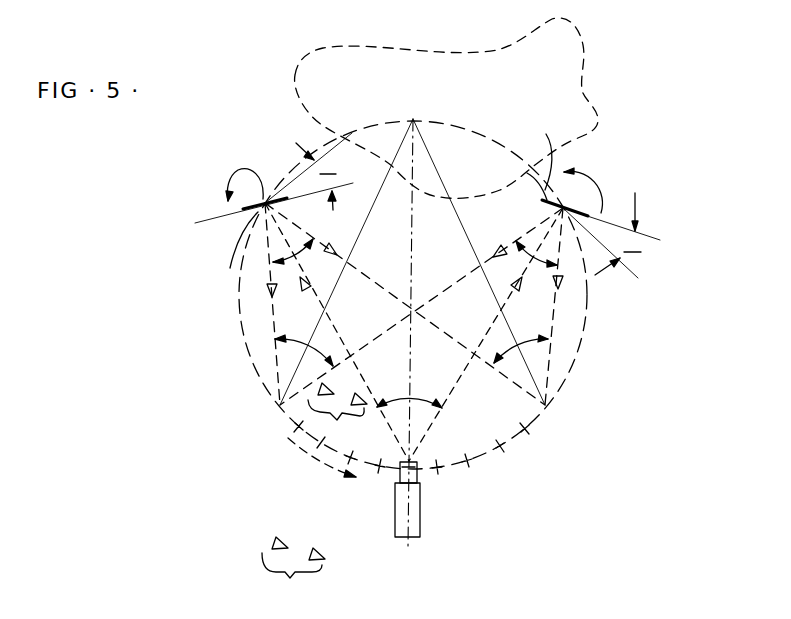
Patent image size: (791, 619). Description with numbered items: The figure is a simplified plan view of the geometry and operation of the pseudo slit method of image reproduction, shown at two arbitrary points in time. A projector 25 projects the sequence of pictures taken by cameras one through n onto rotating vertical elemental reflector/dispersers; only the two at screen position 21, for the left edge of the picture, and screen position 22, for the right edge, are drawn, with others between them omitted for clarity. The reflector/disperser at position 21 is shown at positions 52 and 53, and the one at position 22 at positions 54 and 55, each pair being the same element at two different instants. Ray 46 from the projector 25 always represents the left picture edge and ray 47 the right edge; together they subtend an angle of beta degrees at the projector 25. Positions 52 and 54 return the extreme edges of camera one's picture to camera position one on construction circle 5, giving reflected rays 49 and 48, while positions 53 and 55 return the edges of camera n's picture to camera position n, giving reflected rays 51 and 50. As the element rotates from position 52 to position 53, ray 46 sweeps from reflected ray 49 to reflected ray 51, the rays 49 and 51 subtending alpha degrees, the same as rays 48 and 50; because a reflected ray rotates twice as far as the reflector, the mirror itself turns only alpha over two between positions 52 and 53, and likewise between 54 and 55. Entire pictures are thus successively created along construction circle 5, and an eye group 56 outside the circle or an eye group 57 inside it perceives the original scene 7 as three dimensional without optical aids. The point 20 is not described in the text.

The construction circle 5 is at (573, 362).
The original scene 7 is at (586, 67).
The apex point 20 is at (418, 118).
The screen position 21 is at (265, 172).
The screen position 22 is at (564, 207).
The projector 25 is at (420, 502).
The ray 46 is at (340, 335).
The ray 47 is at (492, 332).
The reflected ray 48 is at (459, 285).
The reflected ray 49 is at (270, 319).
The reflected ray 50 is at (555, 328).
The reflected ray 51 is at (358, 271).
The reflector/disperser position 52 is at (256, 213).
The reflector/disperser position 53 is at (225, 250).
The reflector/disperser position 54 is at (545, 148).
The reflector/disperser position 55 is at (527, 173).
The eye group 56 is at (293, 573).
The eye group 57 is at (328, 420).